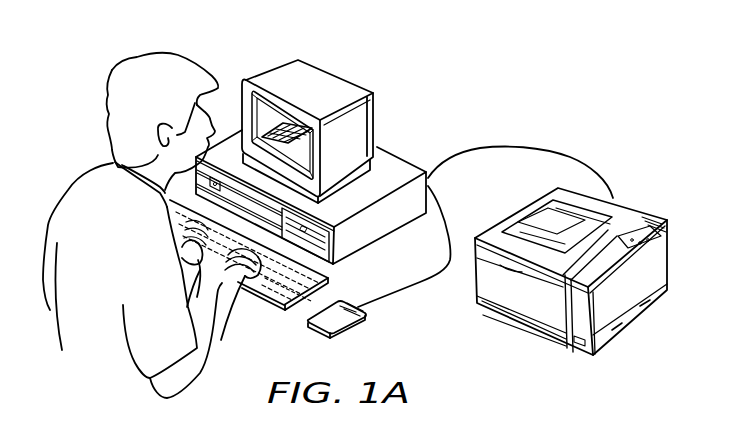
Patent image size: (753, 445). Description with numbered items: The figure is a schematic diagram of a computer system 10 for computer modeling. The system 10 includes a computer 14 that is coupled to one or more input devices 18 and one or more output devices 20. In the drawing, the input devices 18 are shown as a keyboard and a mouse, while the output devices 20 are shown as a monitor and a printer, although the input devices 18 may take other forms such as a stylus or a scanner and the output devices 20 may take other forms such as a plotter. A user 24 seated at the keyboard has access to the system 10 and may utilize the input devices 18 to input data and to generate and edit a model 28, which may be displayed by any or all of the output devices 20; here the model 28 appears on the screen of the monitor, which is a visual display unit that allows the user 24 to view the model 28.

The computer system 10 is at (494, 86).
The computer 14 is at (403, 157).
The input devices 18 is at (273, 302).
The output devices 20 is at (272, 66).
The user 24 is at (157, 58).
The model 28 is at (287, 126).